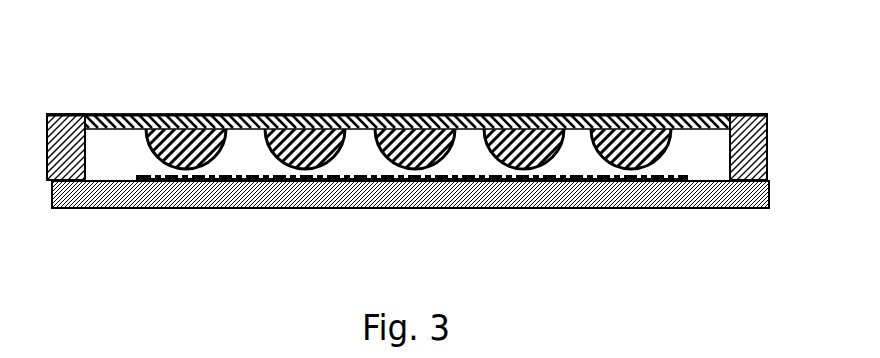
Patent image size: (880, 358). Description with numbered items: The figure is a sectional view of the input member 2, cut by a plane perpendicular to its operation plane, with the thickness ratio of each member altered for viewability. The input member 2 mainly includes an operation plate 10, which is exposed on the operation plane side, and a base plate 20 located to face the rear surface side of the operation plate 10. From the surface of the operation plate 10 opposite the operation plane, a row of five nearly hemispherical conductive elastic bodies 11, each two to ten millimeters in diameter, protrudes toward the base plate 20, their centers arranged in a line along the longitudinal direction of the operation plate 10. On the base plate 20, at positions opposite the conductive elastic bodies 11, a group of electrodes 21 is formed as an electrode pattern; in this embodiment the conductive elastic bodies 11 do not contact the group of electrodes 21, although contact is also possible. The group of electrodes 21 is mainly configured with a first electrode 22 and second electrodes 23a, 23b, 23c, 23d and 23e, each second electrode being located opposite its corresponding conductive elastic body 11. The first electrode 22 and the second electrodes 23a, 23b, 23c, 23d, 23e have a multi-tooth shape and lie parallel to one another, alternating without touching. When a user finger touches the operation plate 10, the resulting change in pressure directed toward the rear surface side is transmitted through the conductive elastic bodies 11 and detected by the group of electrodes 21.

The input member 2 is at (712, 42).
The operation plate 10 is at (95, 114).
The conductive elastic body 11 is at (164, 118).
The base plate 20 is at (118, 209).
The group of electrodes 21 is at (429, 241).
The first electrode 22 is at (147, 209).
The second electrode 23a is at (215, 209).
The second electrode 23b is at (325, 209).
The second electrode 23c is at (432, 209).
The second electrode 23d is at (542, 209).
The second electrode 23e is at (677, 209).